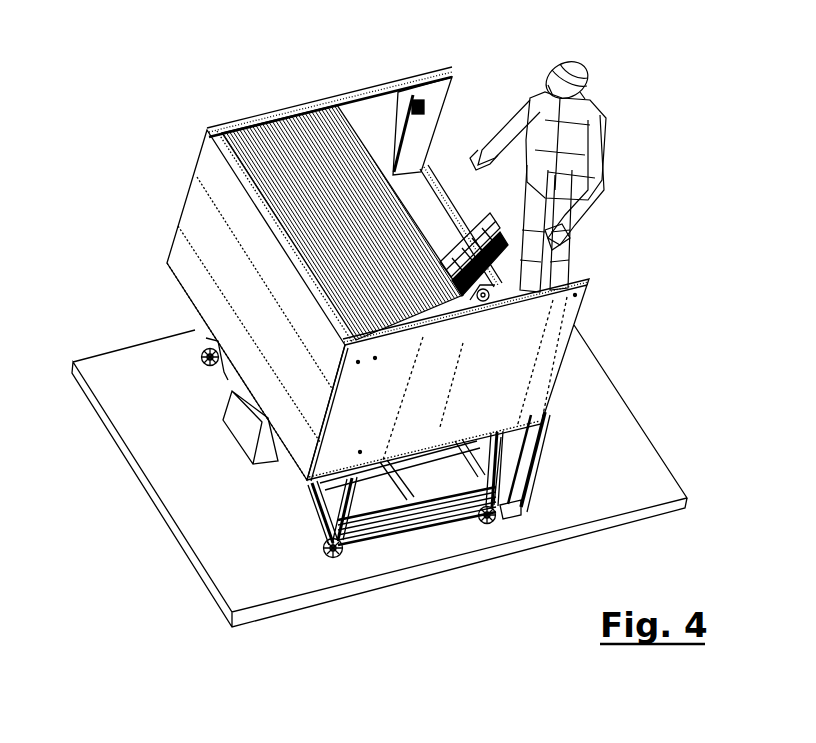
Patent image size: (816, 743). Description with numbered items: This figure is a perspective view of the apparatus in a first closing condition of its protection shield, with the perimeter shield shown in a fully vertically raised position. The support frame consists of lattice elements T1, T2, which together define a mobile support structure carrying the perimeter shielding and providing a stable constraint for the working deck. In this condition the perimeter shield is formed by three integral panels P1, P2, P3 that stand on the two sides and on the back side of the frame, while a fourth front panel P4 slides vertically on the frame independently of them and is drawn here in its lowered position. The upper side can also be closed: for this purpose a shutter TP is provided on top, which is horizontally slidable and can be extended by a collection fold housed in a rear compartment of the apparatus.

The shutter TP is at (267, 132).
The first integral panel P1 is at (377, 113).
The second integral panel P2 is at (200, 217).
The third integral panel P3 is at (558, 348).
The fourth front panel P4 is at (545, 447).
The lattice element T1 is at (443, 513).
The lattice element T2 is at (368, 527).